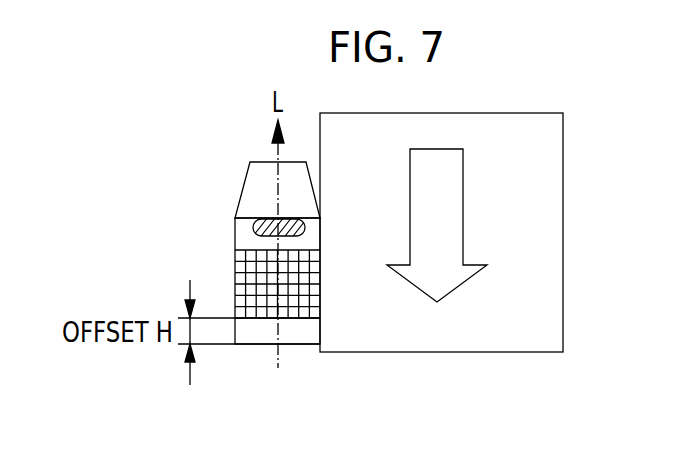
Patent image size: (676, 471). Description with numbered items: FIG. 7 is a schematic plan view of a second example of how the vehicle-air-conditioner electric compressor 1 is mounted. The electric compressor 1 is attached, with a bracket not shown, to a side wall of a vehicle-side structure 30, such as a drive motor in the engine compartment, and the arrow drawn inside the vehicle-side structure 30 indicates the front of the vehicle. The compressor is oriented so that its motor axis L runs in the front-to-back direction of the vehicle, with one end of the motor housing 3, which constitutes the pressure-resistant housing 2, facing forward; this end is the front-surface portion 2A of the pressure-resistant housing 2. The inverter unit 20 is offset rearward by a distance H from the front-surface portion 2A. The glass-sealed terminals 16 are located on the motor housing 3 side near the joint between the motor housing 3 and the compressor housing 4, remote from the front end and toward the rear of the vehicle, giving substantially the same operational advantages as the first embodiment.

The vehicle-air-conditioner electric compressor 1 is at (140, 266).
The pressure-resistant housing 2 is at (216, 248).
The front-surface portion 2A is at (293, 344).
The motor housing 3 is at (243, 335).
The compressor housing 4 is at (252, 171).
The glass-sealed terminals 16 is at (258, 225).
The inverter unit 20 is at (262, 313).
The vehicle-side structure 30 is at (552, 203).